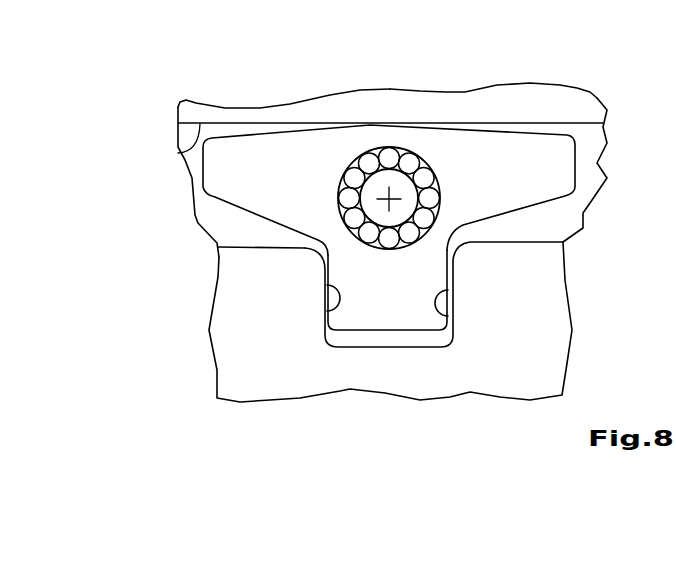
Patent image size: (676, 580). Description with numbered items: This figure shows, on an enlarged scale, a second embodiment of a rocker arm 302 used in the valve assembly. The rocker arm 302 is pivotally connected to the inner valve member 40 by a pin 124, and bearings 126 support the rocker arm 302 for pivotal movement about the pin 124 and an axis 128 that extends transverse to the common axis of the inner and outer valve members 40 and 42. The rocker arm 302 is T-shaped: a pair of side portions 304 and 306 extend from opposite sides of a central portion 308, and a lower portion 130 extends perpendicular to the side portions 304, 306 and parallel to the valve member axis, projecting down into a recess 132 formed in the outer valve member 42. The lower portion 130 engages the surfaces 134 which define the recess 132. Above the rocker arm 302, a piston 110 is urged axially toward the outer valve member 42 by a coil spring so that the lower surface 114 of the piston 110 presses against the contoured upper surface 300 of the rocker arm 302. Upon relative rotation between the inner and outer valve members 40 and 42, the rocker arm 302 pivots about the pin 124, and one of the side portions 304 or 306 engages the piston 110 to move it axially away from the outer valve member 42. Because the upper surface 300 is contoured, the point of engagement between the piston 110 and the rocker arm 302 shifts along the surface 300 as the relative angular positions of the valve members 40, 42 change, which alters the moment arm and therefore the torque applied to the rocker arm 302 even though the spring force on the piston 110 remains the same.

The inner valve member 40 is at (555, 213).
The outer valve member 42 is at (543, 378).
The piston 110 is at (600, 100).
The lower surface 114 is at (178, 153).
The pin 124 is at (398, 187).
The bearings 126 is at (413, 160).
The axis 128 is at (388, 199).
The lower portion 130 is at (358, 302).
The recess 132 is at (413, 337).
The surfaces 134 is at (328, 333).
The upper surface 300 is at (282, 134).
The rocker arm 302 is at (328, 250).
The side portion 304 is at (243, 150).
The side portion 306 is at (530, 153).
The central portion 308 is at (450, 192).